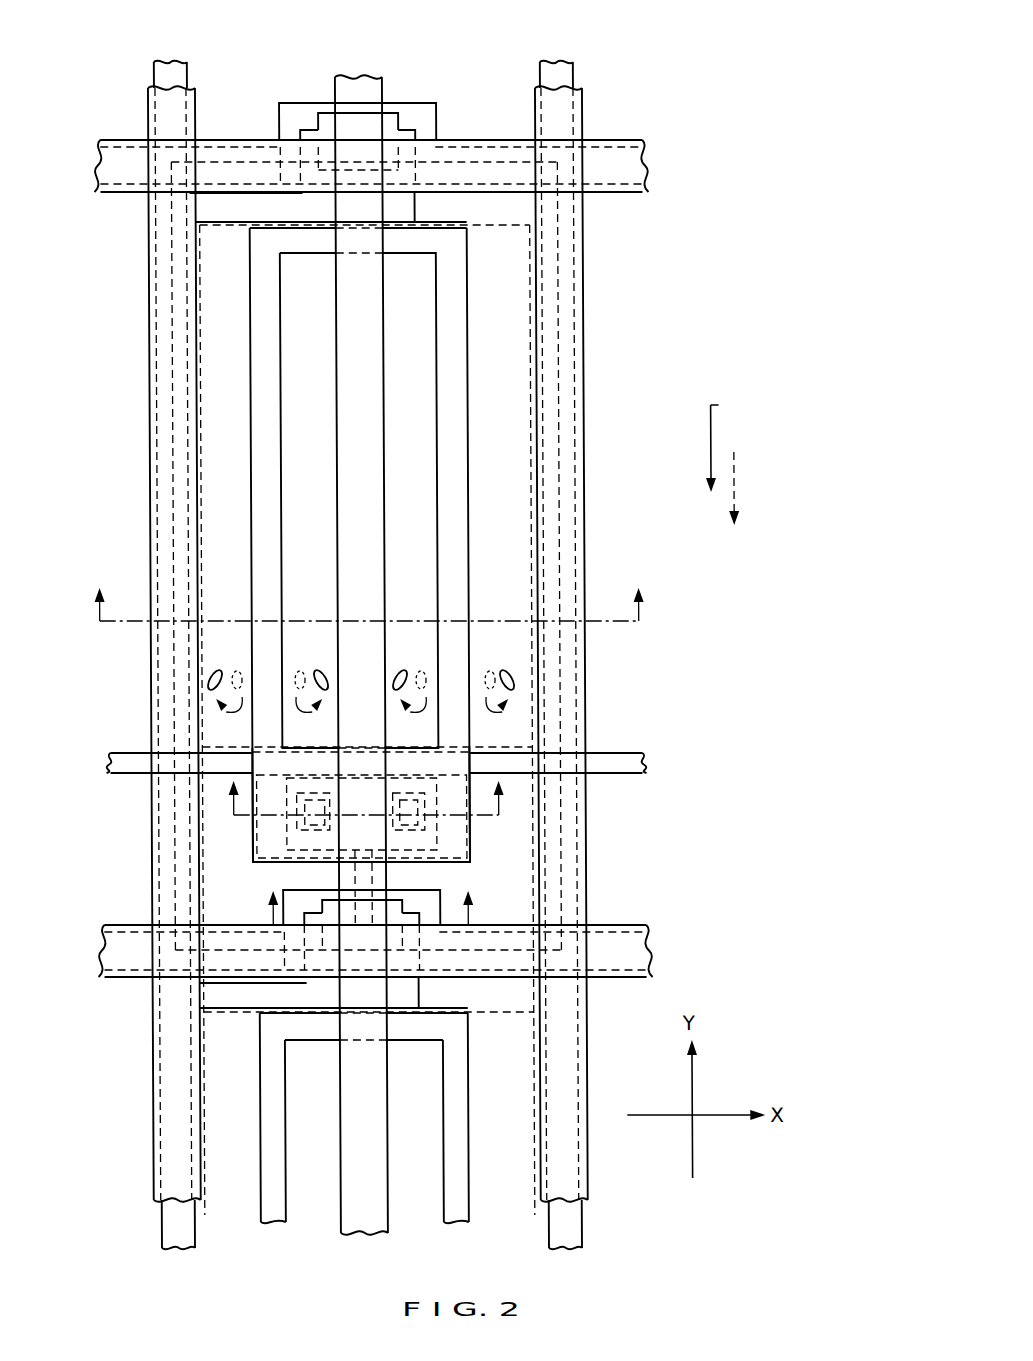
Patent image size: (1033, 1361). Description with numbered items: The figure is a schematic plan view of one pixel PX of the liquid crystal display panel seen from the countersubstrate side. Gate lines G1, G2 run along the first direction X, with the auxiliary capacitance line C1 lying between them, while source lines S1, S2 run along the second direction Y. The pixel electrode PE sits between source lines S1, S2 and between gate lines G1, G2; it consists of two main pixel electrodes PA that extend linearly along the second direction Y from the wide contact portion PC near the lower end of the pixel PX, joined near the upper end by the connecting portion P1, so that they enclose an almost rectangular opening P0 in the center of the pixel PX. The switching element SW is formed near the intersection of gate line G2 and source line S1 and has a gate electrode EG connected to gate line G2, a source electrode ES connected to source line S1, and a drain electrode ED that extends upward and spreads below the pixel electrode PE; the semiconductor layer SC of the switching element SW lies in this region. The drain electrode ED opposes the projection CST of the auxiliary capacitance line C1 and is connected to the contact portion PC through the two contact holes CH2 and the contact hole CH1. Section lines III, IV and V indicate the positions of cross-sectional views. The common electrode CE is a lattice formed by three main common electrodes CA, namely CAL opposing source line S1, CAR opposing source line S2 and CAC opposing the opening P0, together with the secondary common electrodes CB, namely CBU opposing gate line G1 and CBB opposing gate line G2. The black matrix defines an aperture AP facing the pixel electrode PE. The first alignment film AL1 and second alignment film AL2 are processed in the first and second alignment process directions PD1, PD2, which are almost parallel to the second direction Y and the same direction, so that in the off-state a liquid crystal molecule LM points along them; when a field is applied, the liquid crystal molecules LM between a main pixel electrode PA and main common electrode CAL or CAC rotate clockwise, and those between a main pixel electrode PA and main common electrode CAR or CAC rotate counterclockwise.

The source line S1 is at (171, 62).
The source line S2 is at (555, 62).
The gate line G1 is at (660, 168).
The gate line G2 is at (675, 950).
The common electrode CE is at (518, 98).
The secondary common electrode CB is at (441, 539).
The secondary common electrode CBU is at (233, 138).
The secondary common electrode CBB is at (505, 925).
The aperture AP is at (532, 250).
The main common electrode CA is at (366, 654).
The main common electrode CAL is at (150, 504).
The main common electrode CAC is at (372, 392).
The main common electrode CAR is at (588, 553).
The pixel electrode PE is at (365, 545).
The opening P0 is at (290, 334).
The connecting portion P1 is at (408, 244).
The main pixel electrode PA is at (270, 422).
The pixel PX is at (562, 310).
The first alignment process direction PD1 is at (774, 436).
The second alignment process direction PD2 is at (793, 473).
The first alignment film AL1 is at (720, 406).
The second alignment film AL2 is at (735, 452).
The liquid crystal molecule LM is at (536, 698).
The auxiliary capacitance line C1 is at (622, 772).
The contact portion PC is at (366, 795).
The drain electrode ED is at (436, 838).
The contact hole CH2 is at (409, 800).
The contact hole CH1 is at (424, 793).
The projection CST is at (310, 775).
The switching element SW is at (297, 893).
The semiconductor layer SC is at (396, 908).
The gate electrode EG is at (435, 909).
The source electrode ES is at (410, 998).
The section line V- V is at (371, 610).
The section line IV- IV is at (367, 804).
The section line III- III is at (373, 908).